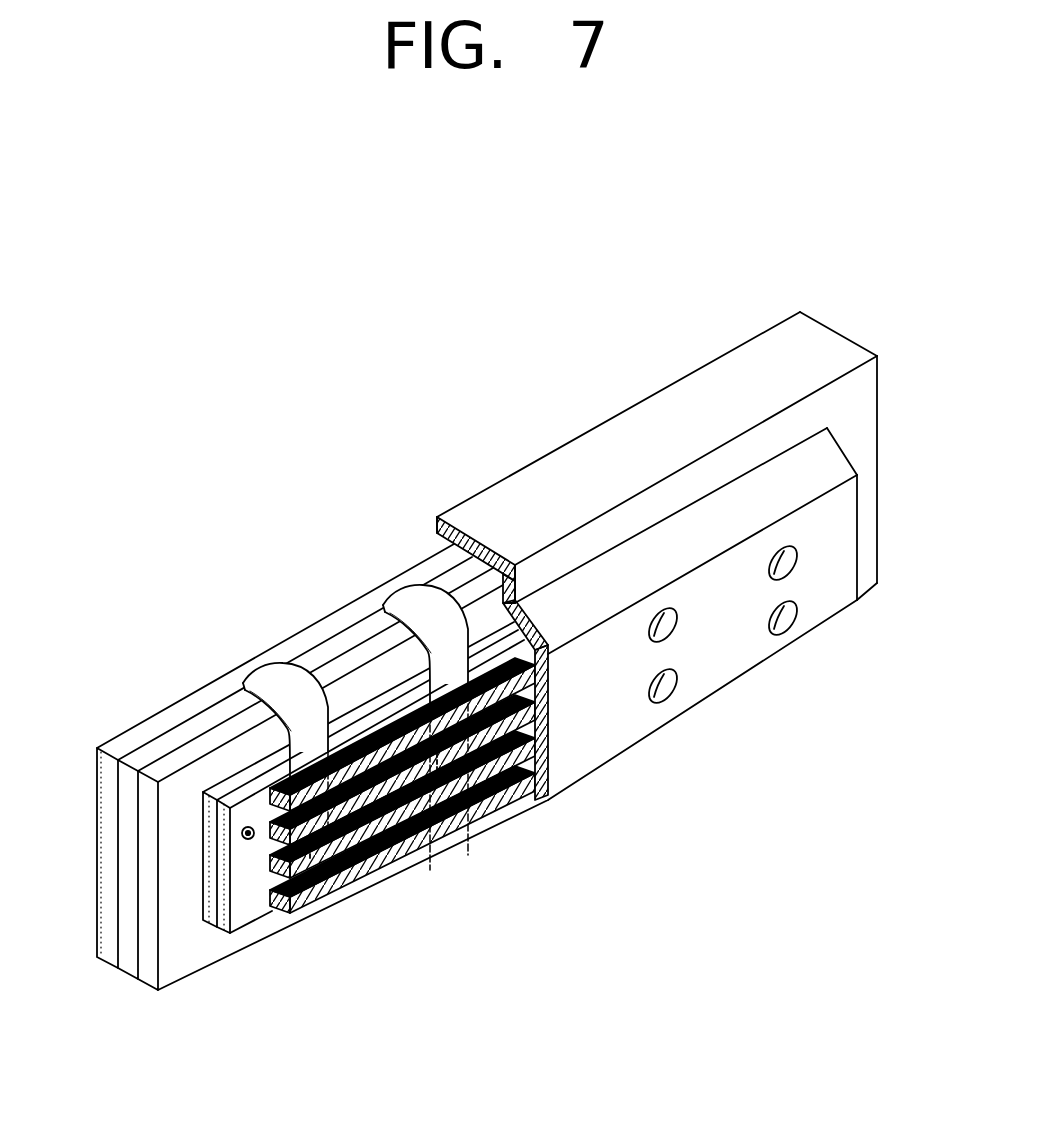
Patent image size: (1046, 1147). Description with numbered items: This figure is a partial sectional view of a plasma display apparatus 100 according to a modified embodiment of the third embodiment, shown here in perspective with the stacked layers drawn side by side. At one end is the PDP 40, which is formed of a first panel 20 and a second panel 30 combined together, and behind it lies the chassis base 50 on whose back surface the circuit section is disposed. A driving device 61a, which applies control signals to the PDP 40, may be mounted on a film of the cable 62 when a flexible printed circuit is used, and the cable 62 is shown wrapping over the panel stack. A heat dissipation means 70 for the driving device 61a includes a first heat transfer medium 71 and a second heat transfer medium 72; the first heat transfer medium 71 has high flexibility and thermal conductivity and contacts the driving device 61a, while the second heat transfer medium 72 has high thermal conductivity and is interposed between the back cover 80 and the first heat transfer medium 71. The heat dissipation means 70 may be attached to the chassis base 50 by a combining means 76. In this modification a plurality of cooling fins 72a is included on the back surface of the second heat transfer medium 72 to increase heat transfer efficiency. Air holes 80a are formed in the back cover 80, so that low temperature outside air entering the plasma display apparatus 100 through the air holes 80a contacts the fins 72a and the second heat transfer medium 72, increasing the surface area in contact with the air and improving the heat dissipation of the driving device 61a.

The first panel 20 is at (122, 742).
The second panel 30 is at (172, 740).
The PDP 40 is at (140, 617).
The chassis base 50 is at (232, 727).
The driving device 61a is at (310, 857).
The cable 62 is at (278, 677).
The heat dissipation means 70 is at (168, 1055).
The first heat transfer medium 71 is at (203, 917).
The second heat transfer medium 72 is at (222, 925).
The cooling fins 72a is at (393, 860).
The combining means 76 is at (248, 842).
The back cover 80 is at (535, 492).
The air holes 80a is at (663, 683).
The plasma display apparatus 100 is at (603, 933).